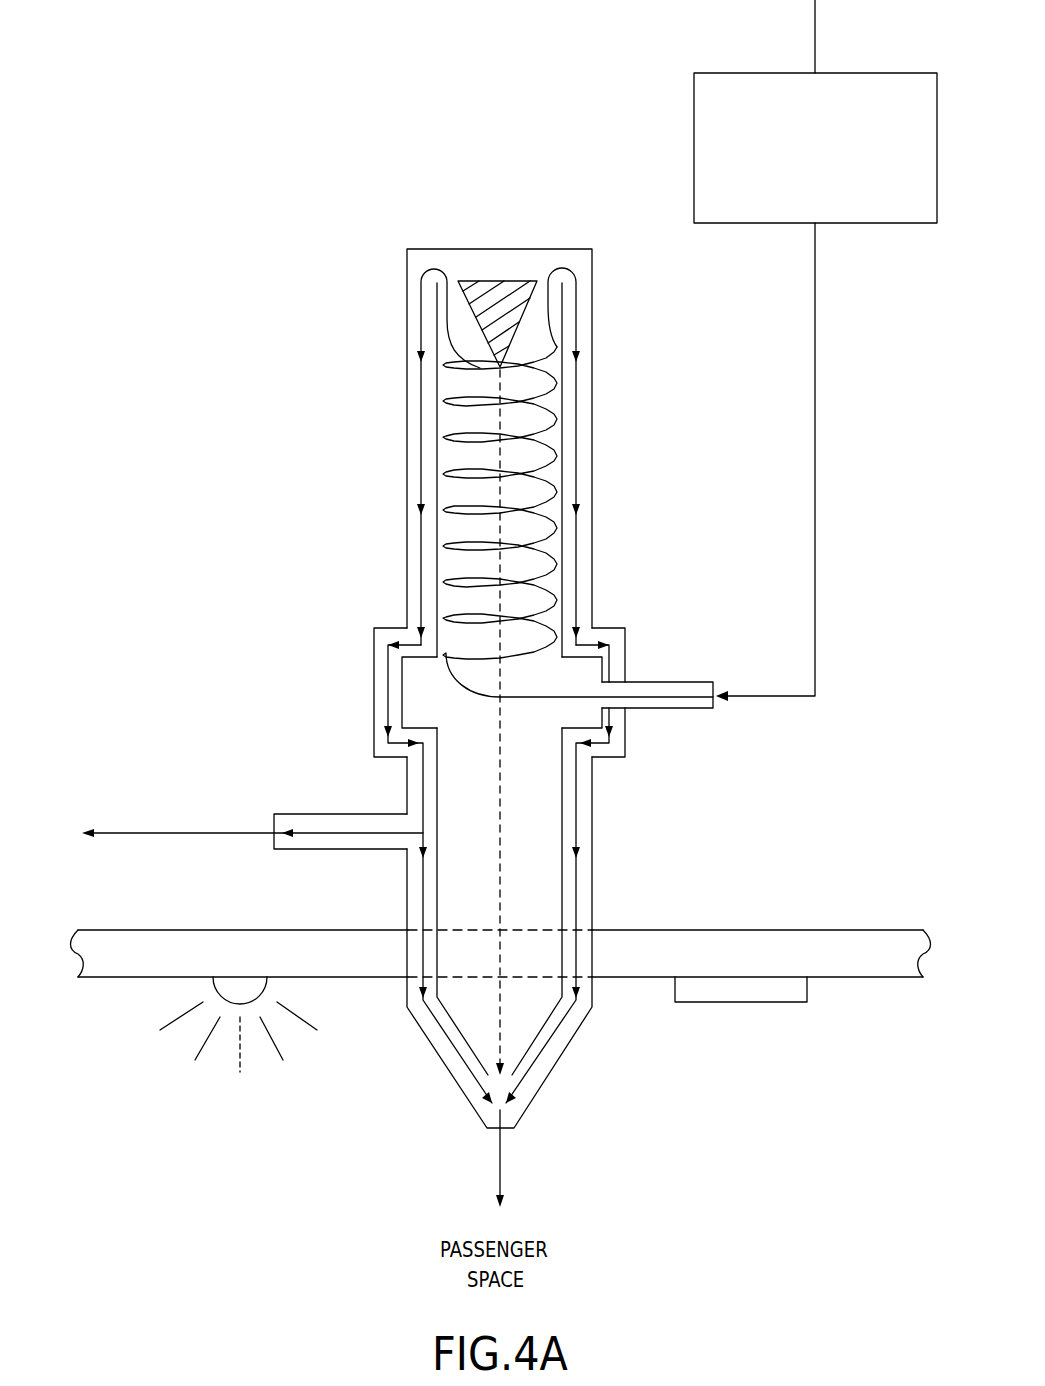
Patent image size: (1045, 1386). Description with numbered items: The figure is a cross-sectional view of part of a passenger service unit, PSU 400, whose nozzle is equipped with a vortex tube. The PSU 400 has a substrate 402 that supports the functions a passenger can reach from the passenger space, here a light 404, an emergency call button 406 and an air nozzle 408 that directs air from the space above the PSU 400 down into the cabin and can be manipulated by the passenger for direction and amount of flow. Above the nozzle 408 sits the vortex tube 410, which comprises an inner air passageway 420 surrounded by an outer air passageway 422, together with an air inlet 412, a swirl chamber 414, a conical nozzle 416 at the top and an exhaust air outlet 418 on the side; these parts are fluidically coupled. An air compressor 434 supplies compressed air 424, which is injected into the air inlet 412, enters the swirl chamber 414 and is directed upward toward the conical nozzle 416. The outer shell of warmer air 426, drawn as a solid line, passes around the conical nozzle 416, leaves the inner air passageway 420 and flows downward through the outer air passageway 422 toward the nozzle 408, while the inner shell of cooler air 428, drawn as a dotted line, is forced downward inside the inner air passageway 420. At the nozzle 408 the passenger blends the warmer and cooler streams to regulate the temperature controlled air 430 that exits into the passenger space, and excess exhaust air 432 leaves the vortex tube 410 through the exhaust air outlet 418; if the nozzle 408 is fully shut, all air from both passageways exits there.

The PSU 400 is at (301, 146).
The substrate 402 is at (130, 930).
The light 404 is at (215, 985).
The emergency call button 406 is at (737, 1002).
The air nozzle 408 is at (552, 1068).
The vortex tube 410 is at (592, 428).
The air inlet 412 is at (665, 682).
The swirl chamber 414 is at (418, 697).
The conical nozzle 416 is at (498, 282).
The exhaust air outlet 418 is at (342, 814).
The inner air passageway 420 is at (547, 447).
The outer air passageway 422 is at (585, 392).
The compressed air 424 is at (815, 430).
The warmer air stream 426 is at (420, 440).
The cooler air stream 428 is at (505, 845).
The temperature controlled air 430 is at (497, 1143).
The excess exhaust air 432 is at (180, 832).
The air compressor 434 is at (738, 104).